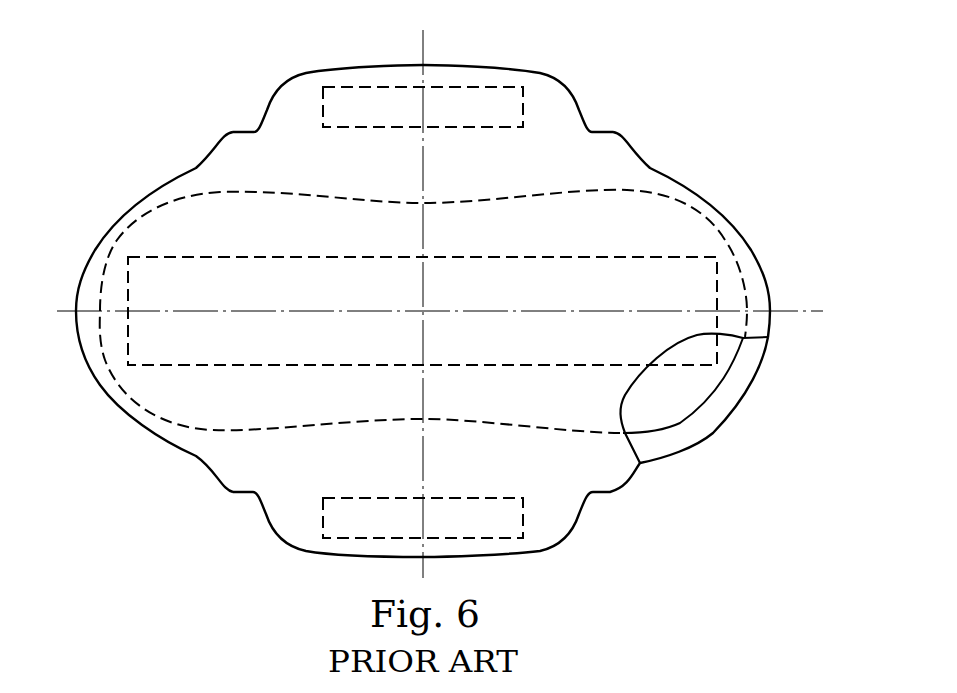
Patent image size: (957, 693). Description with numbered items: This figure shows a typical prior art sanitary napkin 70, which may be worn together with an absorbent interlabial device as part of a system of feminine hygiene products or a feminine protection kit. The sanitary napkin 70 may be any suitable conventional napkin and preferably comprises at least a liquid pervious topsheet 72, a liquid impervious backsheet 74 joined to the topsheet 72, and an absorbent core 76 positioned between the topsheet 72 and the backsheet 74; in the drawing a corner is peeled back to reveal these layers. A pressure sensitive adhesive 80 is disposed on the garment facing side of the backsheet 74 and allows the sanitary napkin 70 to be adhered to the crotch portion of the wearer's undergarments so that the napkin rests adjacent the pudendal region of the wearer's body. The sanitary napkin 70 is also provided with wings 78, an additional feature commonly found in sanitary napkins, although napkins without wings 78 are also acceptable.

The sanitary napkin 70 is at (712, 136).
The liquid pervious topsheet 72 is at (598, 452).
The liquid impervious backsheet 74 is at (747, 372).
The absorbent core 76 is at (677, 413).
The wings 78 is at (563, 102).
The pressure sensitive adhesive 80 is at (510, 85).